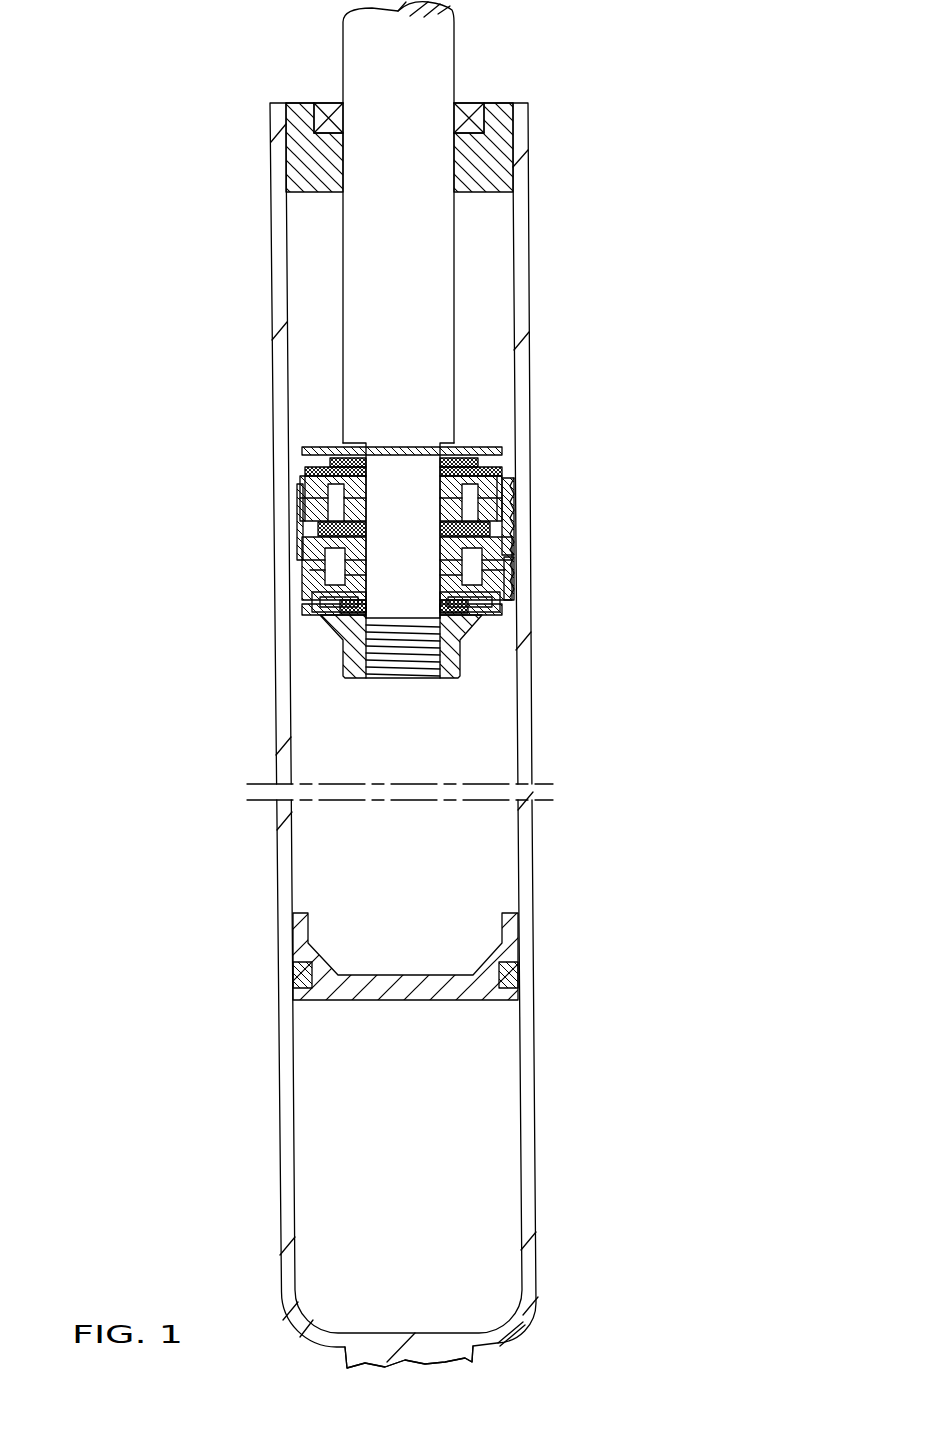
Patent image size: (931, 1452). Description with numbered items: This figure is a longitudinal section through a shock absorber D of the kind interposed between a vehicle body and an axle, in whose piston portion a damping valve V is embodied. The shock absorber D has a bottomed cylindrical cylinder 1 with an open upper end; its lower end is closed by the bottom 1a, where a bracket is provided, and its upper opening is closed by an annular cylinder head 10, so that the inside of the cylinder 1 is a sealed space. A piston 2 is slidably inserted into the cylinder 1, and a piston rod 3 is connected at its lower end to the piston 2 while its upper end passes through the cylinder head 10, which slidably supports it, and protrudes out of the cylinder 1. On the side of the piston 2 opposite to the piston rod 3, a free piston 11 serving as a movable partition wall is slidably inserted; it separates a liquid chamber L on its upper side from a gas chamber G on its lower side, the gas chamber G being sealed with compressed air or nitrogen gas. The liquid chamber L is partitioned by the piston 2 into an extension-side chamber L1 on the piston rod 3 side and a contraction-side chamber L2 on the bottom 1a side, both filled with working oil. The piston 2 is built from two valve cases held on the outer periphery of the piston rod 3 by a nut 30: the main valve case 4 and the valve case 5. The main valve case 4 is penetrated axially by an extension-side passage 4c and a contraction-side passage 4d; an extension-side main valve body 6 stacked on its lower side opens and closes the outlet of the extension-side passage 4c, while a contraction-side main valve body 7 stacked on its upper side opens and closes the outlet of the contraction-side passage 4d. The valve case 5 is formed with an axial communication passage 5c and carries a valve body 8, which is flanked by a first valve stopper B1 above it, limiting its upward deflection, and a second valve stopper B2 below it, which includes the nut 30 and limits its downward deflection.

The cylinder 1 is at (542, 826).
The bottom 1a is at (497, 1343).
The piston 2 is at (290, 557).
The piston rod 3 is at (455, 52).
The main valve case 4 is at (522, 490).
The extension-side passage 4c is at (298, 492).
The contraction-side passage 4d is at (506, 507).
The valve case 5 is at (524, 590).
The communication passage 5c is at (512, 568).
The extension-side main valve body 6 is at (300, 530).
The contraction-side main valve body 7 is at (502, 452).
The valve body 8 is at (295, 615).
The cylinder head 10 is at (497, 148).
The free piston 11 is at (297, 955).
The nut 30 is at (460, 665).
The first valve stopper B1 is at (300, 607).
The second valve stopper B2 is at (500, 632).
The shock absorber D is at (258, 110).
The gas chamber G is at (412, 1178).
The liquid chamber L is at (302, 749).
The extension-side chamber L1 is at (332, 312).
The contraction-side chamber L2 is at (425, 764).
The damping valve V is at (295, 461).